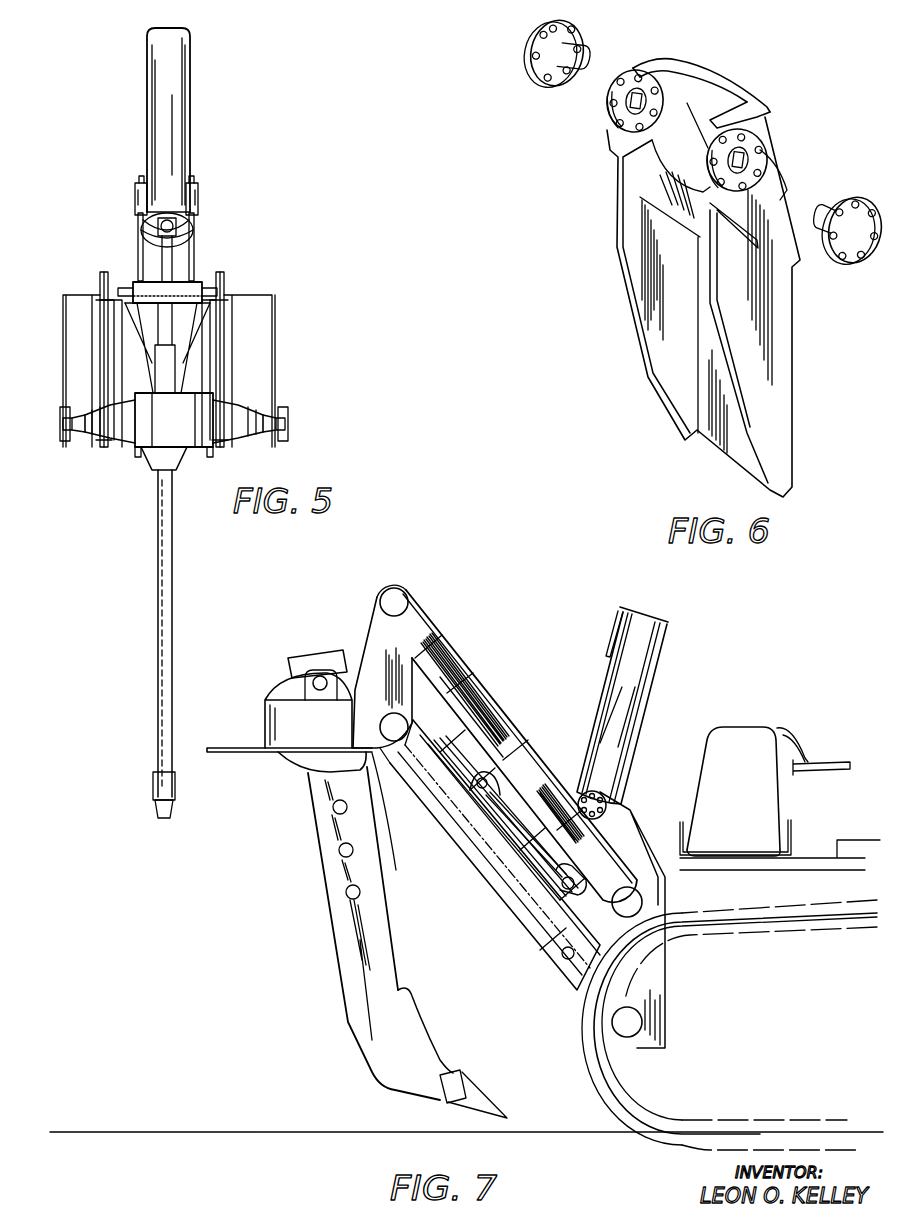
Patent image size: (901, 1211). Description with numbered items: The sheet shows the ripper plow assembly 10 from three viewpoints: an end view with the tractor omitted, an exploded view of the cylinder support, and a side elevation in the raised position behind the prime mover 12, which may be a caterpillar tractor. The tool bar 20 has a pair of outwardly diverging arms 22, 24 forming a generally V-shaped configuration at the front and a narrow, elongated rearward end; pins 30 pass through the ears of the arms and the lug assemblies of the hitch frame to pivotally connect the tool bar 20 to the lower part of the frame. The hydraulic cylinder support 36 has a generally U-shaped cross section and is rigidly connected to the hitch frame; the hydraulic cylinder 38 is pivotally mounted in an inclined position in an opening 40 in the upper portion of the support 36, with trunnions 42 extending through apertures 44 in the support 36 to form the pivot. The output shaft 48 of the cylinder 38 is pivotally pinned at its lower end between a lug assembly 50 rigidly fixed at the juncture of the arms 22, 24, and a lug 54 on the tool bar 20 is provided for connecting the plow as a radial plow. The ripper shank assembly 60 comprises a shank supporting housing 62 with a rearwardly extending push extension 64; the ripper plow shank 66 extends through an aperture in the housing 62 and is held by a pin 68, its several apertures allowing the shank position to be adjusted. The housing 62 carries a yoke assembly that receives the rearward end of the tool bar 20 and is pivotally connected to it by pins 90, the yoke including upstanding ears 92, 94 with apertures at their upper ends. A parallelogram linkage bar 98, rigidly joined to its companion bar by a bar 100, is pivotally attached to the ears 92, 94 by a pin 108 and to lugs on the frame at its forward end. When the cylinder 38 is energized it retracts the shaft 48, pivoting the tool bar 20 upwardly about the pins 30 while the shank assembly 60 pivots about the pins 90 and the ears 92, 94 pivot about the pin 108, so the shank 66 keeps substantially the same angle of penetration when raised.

In FIG. 7, the ripper plow assembly 10 is at (539, 642).
In FIG. 7, the prime mover 12 is at (828, 728).
In FIG. 7, the tool bar 20 is at (518, 922).
In FIG. 5, the arm 22 is at (243, 403).
In FIG. 5, the arm 24 is at (95, 403).
In FIG. 7, the pins 30 is at (630, 1035).
In FIG. 6, the hydraulic cylinder support 36 is at (793, 412).
In FIG. 5, the hydraulic cylinder 38 is at (192, 85).
In FIG. 7, the hydraulic cylinder 38 is at (660, 655).
In FIG. 6, the opening 40 is at (694, 90).
In FIG. 6, the trunnions 42 is at (528, 57).
In FIG. 6, the apertures 44 is at (628, 103).
In FIG. 5, the output shaft 48 is at (176, 260).
In FIG. 7, the output shaft 48 is at (565, 875).
In FIG. 7, the lug assembly 50 is at (555, 872).
In FIG. 7, the lug 54 is at (487, 782).
In FIG. 7, the ripper shank assembly 60 is at (301, 634).
In FIG. 5, the shank supporting housing 62 is at (178, 465).
In FIG. 7, the shank supporting housing 62 is at (300, 770).
In FIG. 7, the push extension 64 is at (225, 745).
In FIG. 5, the ripper plow shank 66 is at (157, 588).
In FIG. 7, the ripper plow shank 66 is at (333, 932).
In FIG. 7, the pin 68 is at (314, 683).
In FIG. 7, the pins 90 is at (380, 790).
In FIG. 5, the ear 92 is at (100, 340).
In FIG. 5, the ear 94 is at (224, 340).
In FIG. 7, the ear 94 is at (374, 628).
In FIG. 7, the parallelogram linkage bar 98 is at (495, 705).
In FIG. 5, the bar 100 is at (150, 285).
In FIG. 7, the pin 108 is at (397, 602).